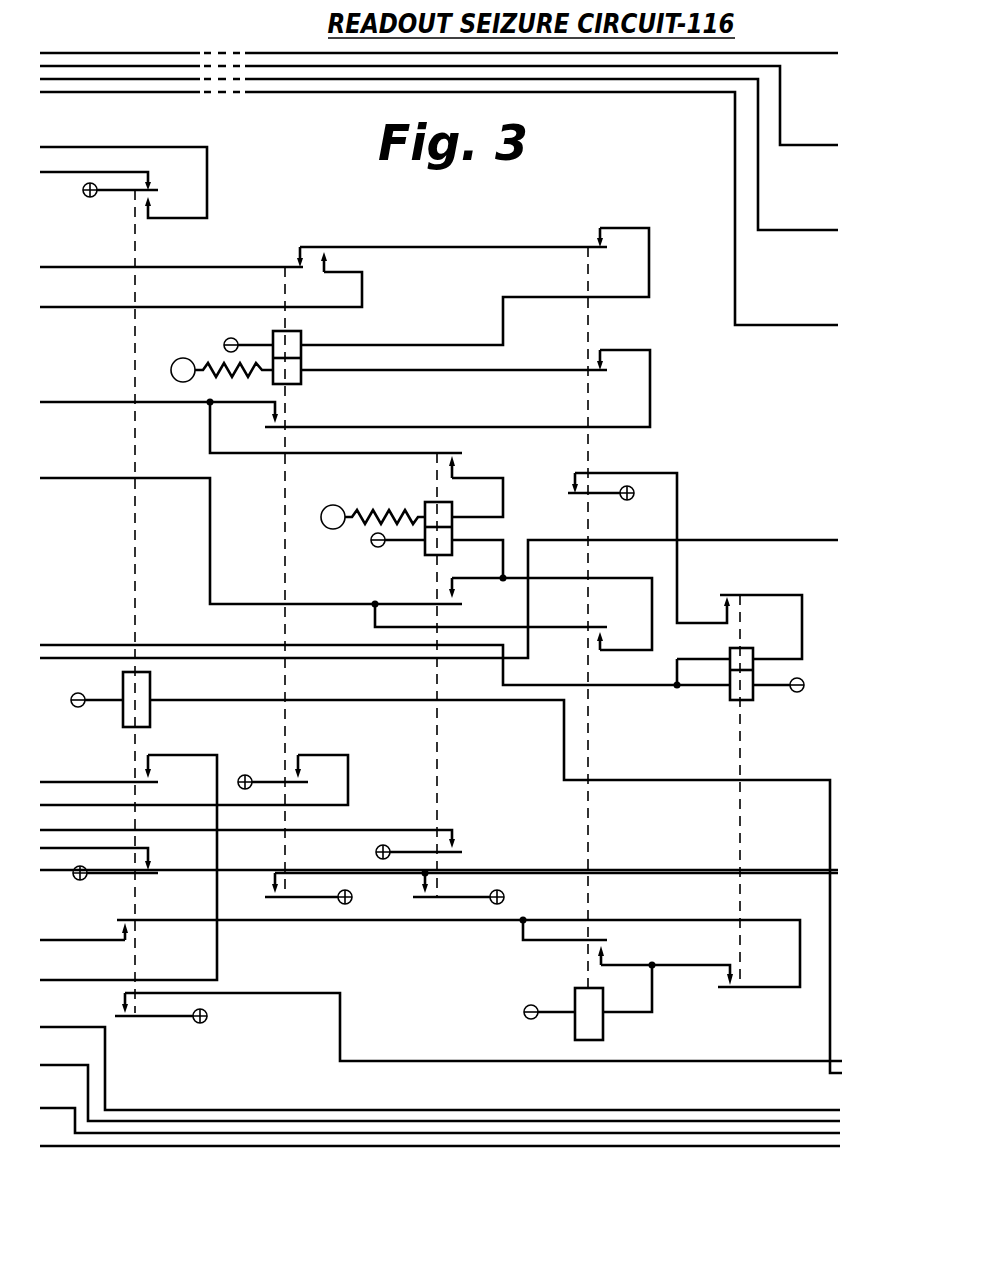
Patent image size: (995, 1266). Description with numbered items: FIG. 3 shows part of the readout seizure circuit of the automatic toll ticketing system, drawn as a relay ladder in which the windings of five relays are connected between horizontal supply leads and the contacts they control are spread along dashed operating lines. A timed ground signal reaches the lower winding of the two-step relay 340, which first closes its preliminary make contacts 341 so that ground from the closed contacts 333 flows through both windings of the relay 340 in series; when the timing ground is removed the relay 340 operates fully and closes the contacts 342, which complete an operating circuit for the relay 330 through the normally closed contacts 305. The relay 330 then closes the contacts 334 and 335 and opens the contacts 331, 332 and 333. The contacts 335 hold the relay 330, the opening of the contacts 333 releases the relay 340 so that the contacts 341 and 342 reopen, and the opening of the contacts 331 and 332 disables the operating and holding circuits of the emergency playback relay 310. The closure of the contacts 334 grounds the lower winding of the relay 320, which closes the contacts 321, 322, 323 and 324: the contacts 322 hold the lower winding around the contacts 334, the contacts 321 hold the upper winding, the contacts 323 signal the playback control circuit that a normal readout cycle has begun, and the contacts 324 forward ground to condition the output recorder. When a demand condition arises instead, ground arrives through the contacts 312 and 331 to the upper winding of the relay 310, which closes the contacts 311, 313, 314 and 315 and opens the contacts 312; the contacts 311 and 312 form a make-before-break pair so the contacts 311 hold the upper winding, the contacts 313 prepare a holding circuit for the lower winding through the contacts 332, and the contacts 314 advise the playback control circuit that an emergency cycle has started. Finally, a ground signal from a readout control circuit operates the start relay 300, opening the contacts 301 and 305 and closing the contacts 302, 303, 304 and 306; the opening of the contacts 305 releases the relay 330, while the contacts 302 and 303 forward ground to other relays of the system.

The start relay 300 is at (150, 718).
The contacts 301 is at (160, 181).
The contacts 302 is at (152, 203).
The contacts 303 is at (156, 776).
The contacts 304 is at (154, 868).
The normally closed contacts 305 is at (117, 923).
The contacts 306 is at (118, 1008).
The emergency playback relay 310 is at (301, 380).
The contacts 311 is at (328, 258).
The contacts 312 is at (292, 263).
The contacts 313 is at (268, 422).
The contacts 314 is at (318, 780).
The contacts 315 is at (272, 886).
The relay 320 is at (452, 530).
The contacts 321 is at (460, 458).
The contacts 322 is at (460, 600).
The contacts 323 is at (458, 848).
The contacts 324 is at (416, 895).
The relay 330 is at (603, 1028).
The contacts 331 is at (598, 243).
The contacts 332 is at (606, 358).
The contacts 333 is at (570, 492).
The contacts 334 is at (606, 636).
The contacts 335 is at (607, 948).
The two-step relay 340 is at (728, 700).
The preliminary make contacts 341 is at (722, 598).
The contacts 342 is at (720, 980).